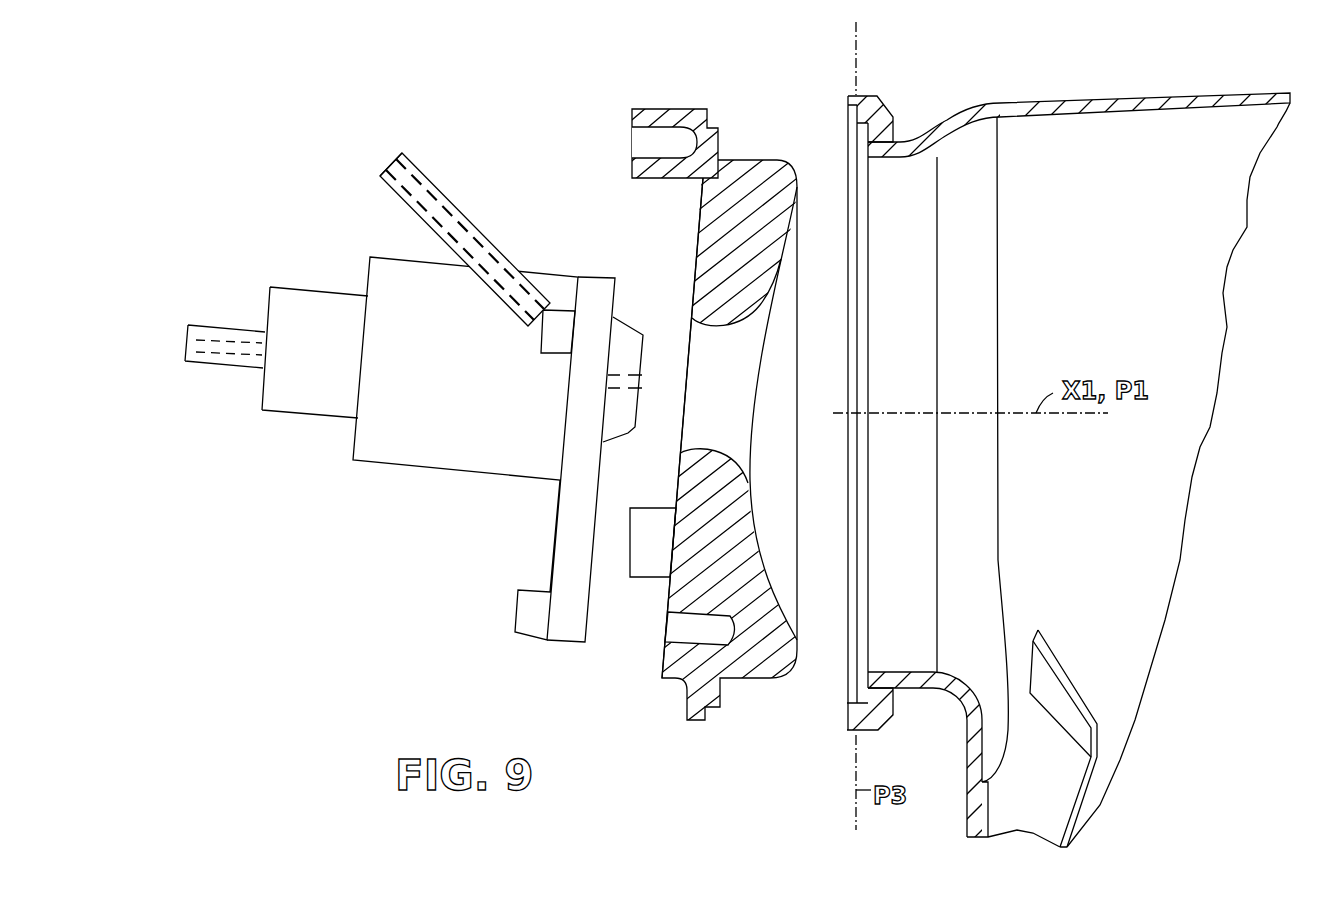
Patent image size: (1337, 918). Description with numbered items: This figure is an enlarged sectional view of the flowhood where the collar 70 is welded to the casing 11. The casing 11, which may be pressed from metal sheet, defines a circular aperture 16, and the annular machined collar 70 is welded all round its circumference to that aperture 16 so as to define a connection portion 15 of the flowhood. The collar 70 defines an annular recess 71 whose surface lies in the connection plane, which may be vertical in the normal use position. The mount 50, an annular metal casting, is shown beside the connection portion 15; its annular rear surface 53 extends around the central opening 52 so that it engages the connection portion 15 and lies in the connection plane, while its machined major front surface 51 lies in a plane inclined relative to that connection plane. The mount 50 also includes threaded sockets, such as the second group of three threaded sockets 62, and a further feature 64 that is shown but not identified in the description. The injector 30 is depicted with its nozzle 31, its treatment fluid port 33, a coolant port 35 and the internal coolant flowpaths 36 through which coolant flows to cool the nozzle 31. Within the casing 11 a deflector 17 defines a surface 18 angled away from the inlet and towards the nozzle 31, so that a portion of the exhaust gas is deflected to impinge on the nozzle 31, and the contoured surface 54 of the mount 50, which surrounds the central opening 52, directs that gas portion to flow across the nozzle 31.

The casing 11 is at (1078, 101).
The connection portion 15 is at (828, 106).
The circular aperture 16 is at (907, 160).
The deflector 17 is at (1063, 660).
The surface 18 is at (1055, 692).
The injector 30 is at (435, 496).
The nozzle 31 is at (624, 430).
The treatment fluid port 33 is at (191, 337).
The coolant port 35 is at (392, 163).
The internal coolant flowpaths 36 is at (432, 193).
The mount 50 is at (717, 734).
The major front surface 51 is at (700, 243).
The central opening 52 is at (713, 327).
The annular rear surface 53 is at (713, 118).
The contoured surface 54 is at (768, 452).
The second group of three threaded sockets 62 is at (675, 630).
The bore 64 is at (641, 139).
The collar 70 is at (885, 106).
The annular recess 71 is at (847, 708).